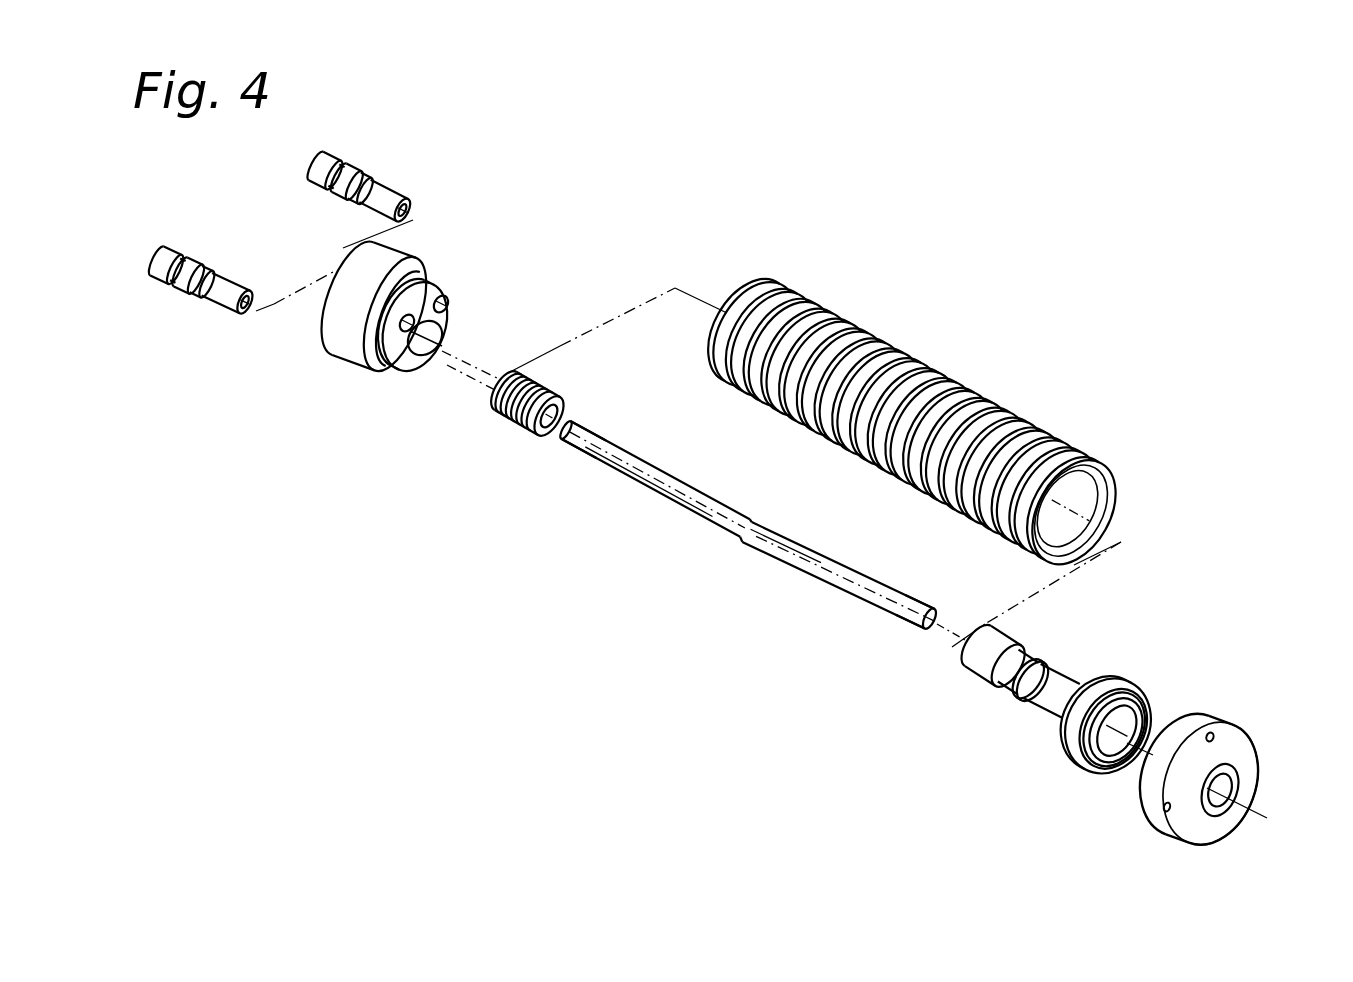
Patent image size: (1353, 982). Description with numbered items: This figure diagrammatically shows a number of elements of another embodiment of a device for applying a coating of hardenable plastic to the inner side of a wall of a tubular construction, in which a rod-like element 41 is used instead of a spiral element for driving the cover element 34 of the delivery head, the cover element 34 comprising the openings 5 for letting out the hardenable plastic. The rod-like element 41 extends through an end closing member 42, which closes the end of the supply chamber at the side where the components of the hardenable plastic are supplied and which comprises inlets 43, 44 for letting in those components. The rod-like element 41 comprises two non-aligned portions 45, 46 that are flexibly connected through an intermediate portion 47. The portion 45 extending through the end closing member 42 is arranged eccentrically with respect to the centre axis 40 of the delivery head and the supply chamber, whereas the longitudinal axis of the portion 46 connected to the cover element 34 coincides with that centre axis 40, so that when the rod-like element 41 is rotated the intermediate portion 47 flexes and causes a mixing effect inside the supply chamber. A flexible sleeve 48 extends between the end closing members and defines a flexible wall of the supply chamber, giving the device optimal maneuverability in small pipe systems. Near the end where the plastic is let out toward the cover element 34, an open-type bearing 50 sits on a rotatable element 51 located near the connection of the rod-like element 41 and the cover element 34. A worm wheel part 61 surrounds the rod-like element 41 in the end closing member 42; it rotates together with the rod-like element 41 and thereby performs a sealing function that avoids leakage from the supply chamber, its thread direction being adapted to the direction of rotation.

The openings 5 is at (1212, 732).
The cover element 34 is at (1238, 750).
The centre axis 40 is at (832, 571).
The rod-like element 41 is at (652, 487).
The end closing member 42 is at (423, 286).
The inlet 43 is at (195, 256).
The inlet 44 is at (346, 172).
The portion 45 is at (583, 447).
The portion 46 is at (902, 614).
The intermediate portion 47 is at (752, 535).
The flexible sleeve 48 is at (840, 340).
The open-type bearing 50 is at (1106, 686).
The rotatable element 51 is at (976, 668).
The worm wheel part 61 is at (517, 408).